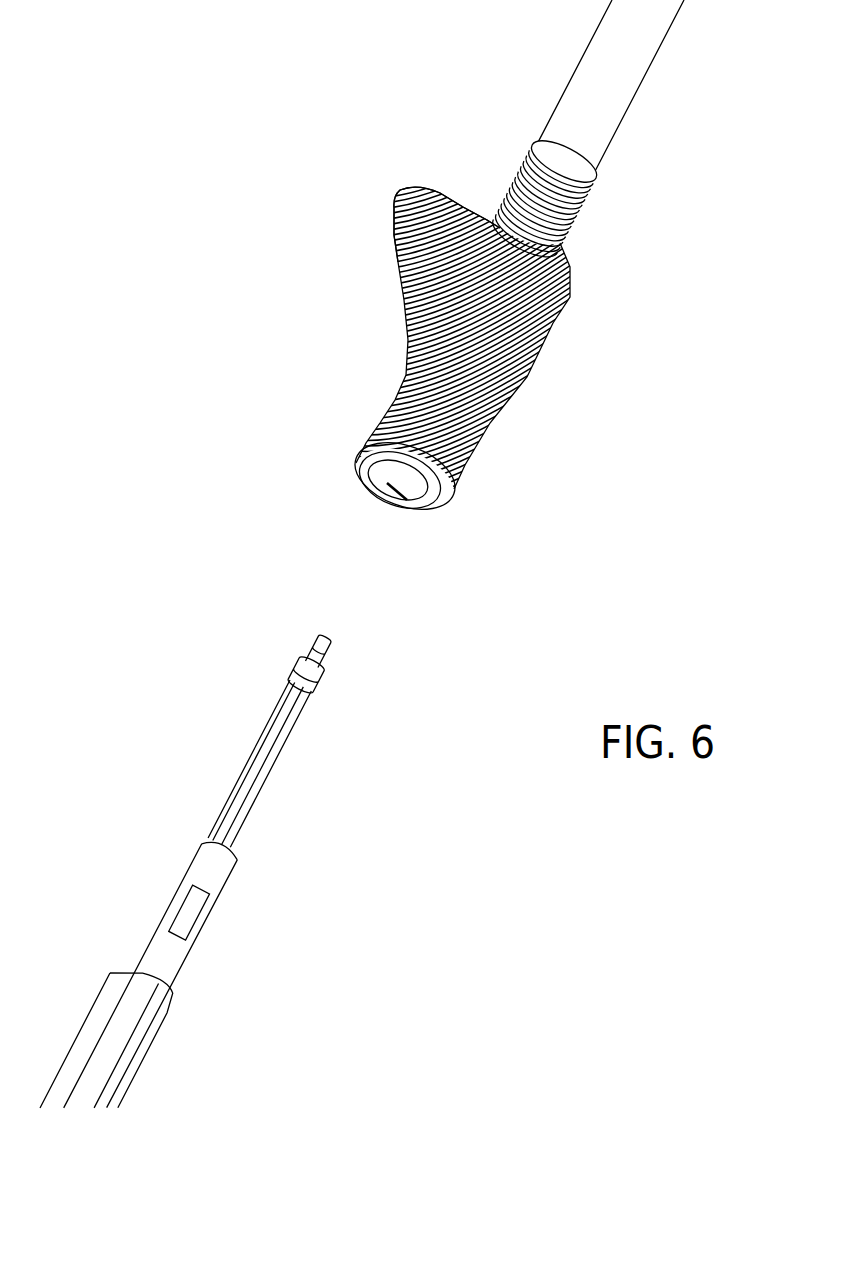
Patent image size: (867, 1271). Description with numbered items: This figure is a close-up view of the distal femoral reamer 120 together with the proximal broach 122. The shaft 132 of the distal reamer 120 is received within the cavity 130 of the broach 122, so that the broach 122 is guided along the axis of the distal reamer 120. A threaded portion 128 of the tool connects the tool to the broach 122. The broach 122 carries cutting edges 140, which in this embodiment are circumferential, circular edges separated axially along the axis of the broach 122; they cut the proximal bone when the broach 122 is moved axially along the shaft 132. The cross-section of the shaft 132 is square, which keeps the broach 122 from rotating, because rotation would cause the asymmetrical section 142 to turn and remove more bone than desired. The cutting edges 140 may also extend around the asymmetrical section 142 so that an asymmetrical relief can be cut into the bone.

The distal femoral reamer 120 is at (268, 880).
The proximal broach 122 is at (485, 300).
The threaded portion 128 is at (573, 220).
The cavity 130 is at (407, 507).
The shaft 132 is at (253, 787).
The cutting edges 140 is at (483, 407).
The asymmetrical section 142 is at (405, 229).